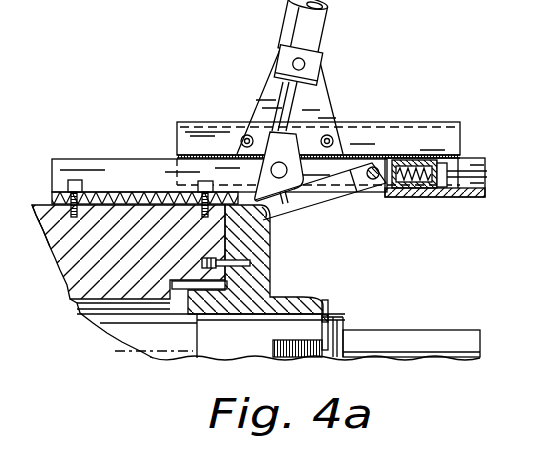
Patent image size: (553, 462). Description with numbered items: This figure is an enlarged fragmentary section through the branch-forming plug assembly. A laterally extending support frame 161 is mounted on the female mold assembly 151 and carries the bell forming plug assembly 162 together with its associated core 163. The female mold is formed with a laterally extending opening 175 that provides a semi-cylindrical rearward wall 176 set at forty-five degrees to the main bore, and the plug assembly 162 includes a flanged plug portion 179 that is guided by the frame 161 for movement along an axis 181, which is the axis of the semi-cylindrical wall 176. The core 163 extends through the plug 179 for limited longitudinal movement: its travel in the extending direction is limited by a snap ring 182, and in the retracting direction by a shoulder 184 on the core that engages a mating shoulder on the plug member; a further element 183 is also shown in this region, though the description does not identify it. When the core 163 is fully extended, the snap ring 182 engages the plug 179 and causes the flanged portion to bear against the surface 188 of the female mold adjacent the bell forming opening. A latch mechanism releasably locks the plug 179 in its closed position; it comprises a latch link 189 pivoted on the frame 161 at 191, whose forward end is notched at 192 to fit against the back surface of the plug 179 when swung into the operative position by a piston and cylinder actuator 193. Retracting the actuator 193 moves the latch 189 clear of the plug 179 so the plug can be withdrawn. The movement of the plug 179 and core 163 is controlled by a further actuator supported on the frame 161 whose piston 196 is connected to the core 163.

The female mold assembly 151 is at (42, 212).
The support frame 161 is at (117, 168).
The bell forming plug assembly 162 is at (279, 290).
The core 163 is at (113, 340).
The laterally extending opening 175 is at (170, 282).
The semi-cylindrical rearward wall 176 is at (80, 304).
The flanged plug portion 179 is at (218, 316).
The axis 181 is at (128, 352).
The snap ring 182 is at (333, 308).
The threaded stud 183 is at (200, 343).
The shoulder 184 is at (308, 308).
The surface of the female mold 188 is at (228, 246).
The latch link 189 is at (330, 198).
The pivot 191 is at (374, 166).
The notch 192 is at (264, 215).
The piston and cylinder actuator 193 is at (325, 29).
The piston 196 is at (437, 337).